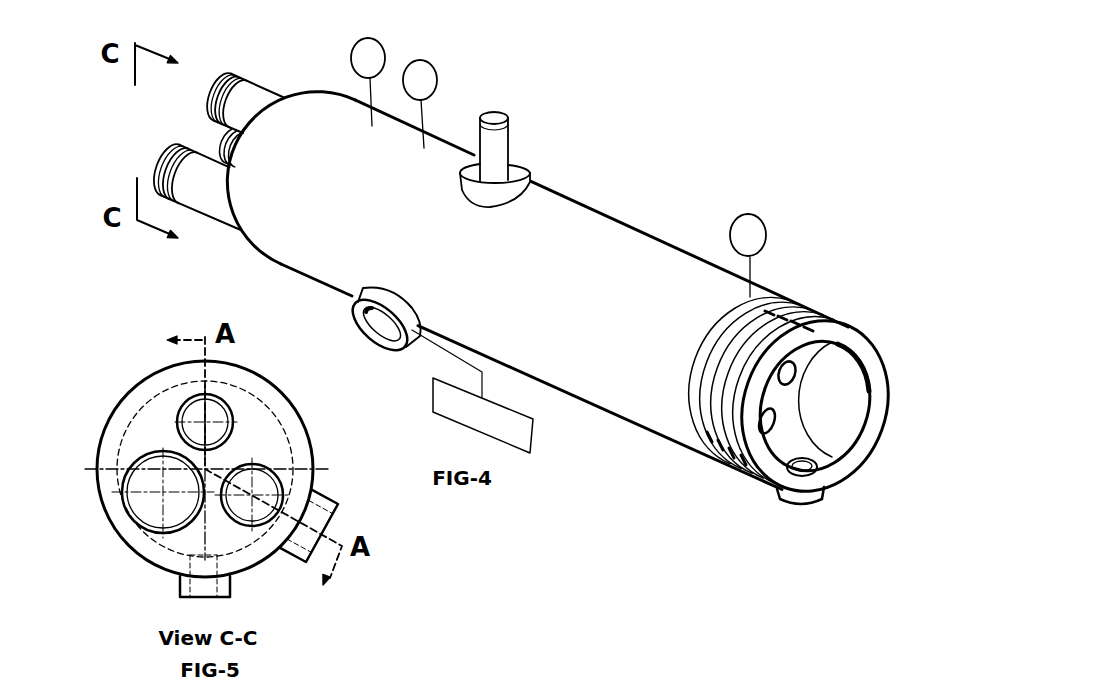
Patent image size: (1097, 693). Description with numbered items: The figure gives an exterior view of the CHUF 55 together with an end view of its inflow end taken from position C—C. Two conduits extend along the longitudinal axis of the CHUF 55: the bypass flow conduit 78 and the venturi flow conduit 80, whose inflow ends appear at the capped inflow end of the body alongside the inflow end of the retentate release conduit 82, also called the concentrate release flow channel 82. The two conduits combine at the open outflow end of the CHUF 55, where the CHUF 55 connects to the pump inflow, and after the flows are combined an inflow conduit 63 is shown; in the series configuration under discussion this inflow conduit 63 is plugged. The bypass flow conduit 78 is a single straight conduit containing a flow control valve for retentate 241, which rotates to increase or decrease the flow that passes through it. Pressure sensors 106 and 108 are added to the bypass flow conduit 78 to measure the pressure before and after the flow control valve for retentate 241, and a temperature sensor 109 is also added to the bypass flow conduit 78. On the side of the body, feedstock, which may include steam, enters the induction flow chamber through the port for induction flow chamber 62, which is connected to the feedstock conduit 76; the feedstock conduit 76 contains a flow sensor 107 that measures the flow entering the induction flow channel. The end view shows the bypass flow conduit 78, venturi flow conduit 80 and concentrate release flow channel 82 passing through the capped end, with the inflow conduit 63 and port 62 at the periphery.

In FIG. 4, the CHUF 55 is at (603, 215).
In FIG. 5, the CHUF 55 is at (100, 508).
In FIG. 4, the bypass flow conduit 78 is at (262, 82).
In FIG. 5, the bypass flow conduit 78 is at (183, 400).
In FIG. 4, the venturi flow conduit 80 is at (213, 220).
In FIG. 5, the venturi flow conduit 80 is at (255, 523).
In FIG. 4, the retentate release conduit 82 is at (220, 140).
In FIG. 5, the retentate release conduit 82 is at (133, 465).
In FIG. 4, the port for induction flow chamber 62 is at (353, 312).
In FIG. 5, the port for induction flow chamber 62 is at (317, 513).
In FIG. 4, the feedstock conduit 76 is at (402, 343).
In FIG. 4, the inflow conduit 63 is at (780, 500).
In FIG. 5, the inflow conduit 63 is at (180, 595).
In FIG. 4, the pressure sensor 106 is at (352, 52).
In FIG. 4, the pressure sensor 108 is at (760, 218).
In FIG. 4, the temperature sensor 109 is at (436, 63).
In FIG. 4, the flow sensor 107 is at (532, 433).
In FIG. 4, the flow control valve for retentate 241 is at (507, 114).